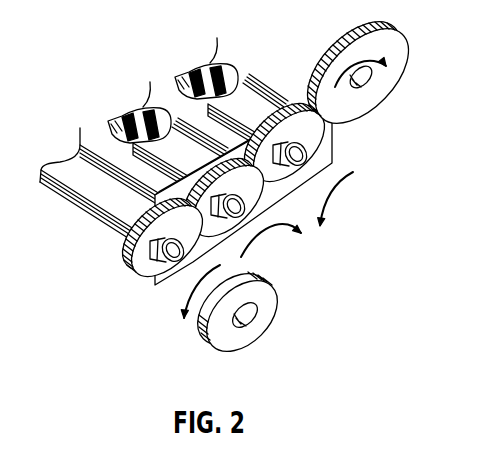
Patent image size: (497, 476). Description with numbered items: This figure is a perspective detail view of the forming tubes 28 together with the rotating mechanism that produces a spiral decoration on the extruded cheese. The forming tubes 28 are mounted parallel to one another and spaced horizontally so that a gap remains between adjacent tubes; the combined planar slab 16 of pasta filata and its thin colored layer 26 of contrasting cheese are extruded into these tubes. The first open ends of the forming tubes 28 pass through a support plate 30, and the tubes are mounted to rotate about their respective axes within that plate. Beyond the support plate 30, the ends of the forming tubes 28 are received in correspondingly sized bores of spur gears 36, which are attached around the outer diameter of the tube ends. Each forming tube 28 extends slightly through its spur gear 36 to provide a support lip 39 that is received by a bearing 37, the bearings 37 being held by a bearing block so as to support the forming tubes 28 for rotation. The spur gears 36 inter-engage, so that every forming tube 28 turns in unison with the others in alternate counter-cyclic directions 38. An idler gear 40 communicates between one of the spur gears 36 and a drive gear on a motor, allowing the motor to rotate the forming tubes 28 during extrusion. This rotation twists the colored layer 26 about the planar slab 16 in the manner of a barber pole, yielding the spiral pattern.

The planar slab 16 is at (210, 74).
The colored layer 26 is at (173, 96).
The forming tubes 28 is at (248, 108).
The support plate 30 is at (333, 159).
The spur gears 36 is at (150, 268).
The bearings 37 is at (268, 303).
The alternate counter-cyclic directions 38 is at (323, 186).
The support lip 39 is at (157, 250).
The idler gear 40 is at (367, 97).